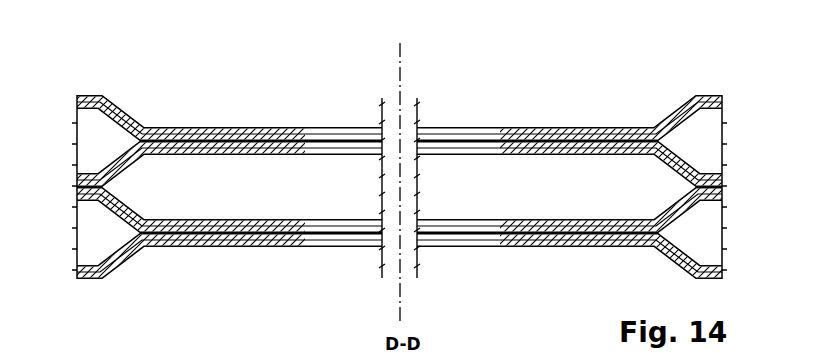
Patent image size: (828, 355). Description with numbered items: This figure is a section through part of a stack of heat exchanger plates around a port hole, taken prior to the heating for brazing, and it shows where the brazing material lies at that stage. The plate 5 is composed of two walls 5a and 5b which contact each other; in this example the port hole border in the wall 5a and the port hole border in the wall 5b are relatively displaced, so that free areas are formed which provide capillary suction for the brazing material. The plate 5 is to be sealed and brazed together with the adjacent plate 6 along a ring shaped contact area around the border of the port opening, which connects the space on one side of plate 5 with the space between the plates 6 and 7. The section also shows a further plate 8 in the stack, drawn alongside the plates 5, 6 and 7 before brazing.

The plate 5 is at (124, 108).
The wall 5a is at (172, 127).
The wall 5b is at (517, 132).
The plate 6 is at (128, 183).
The plate 7 is at (123, 220).
The lower layer of lower strip 8 is at (135, 257).